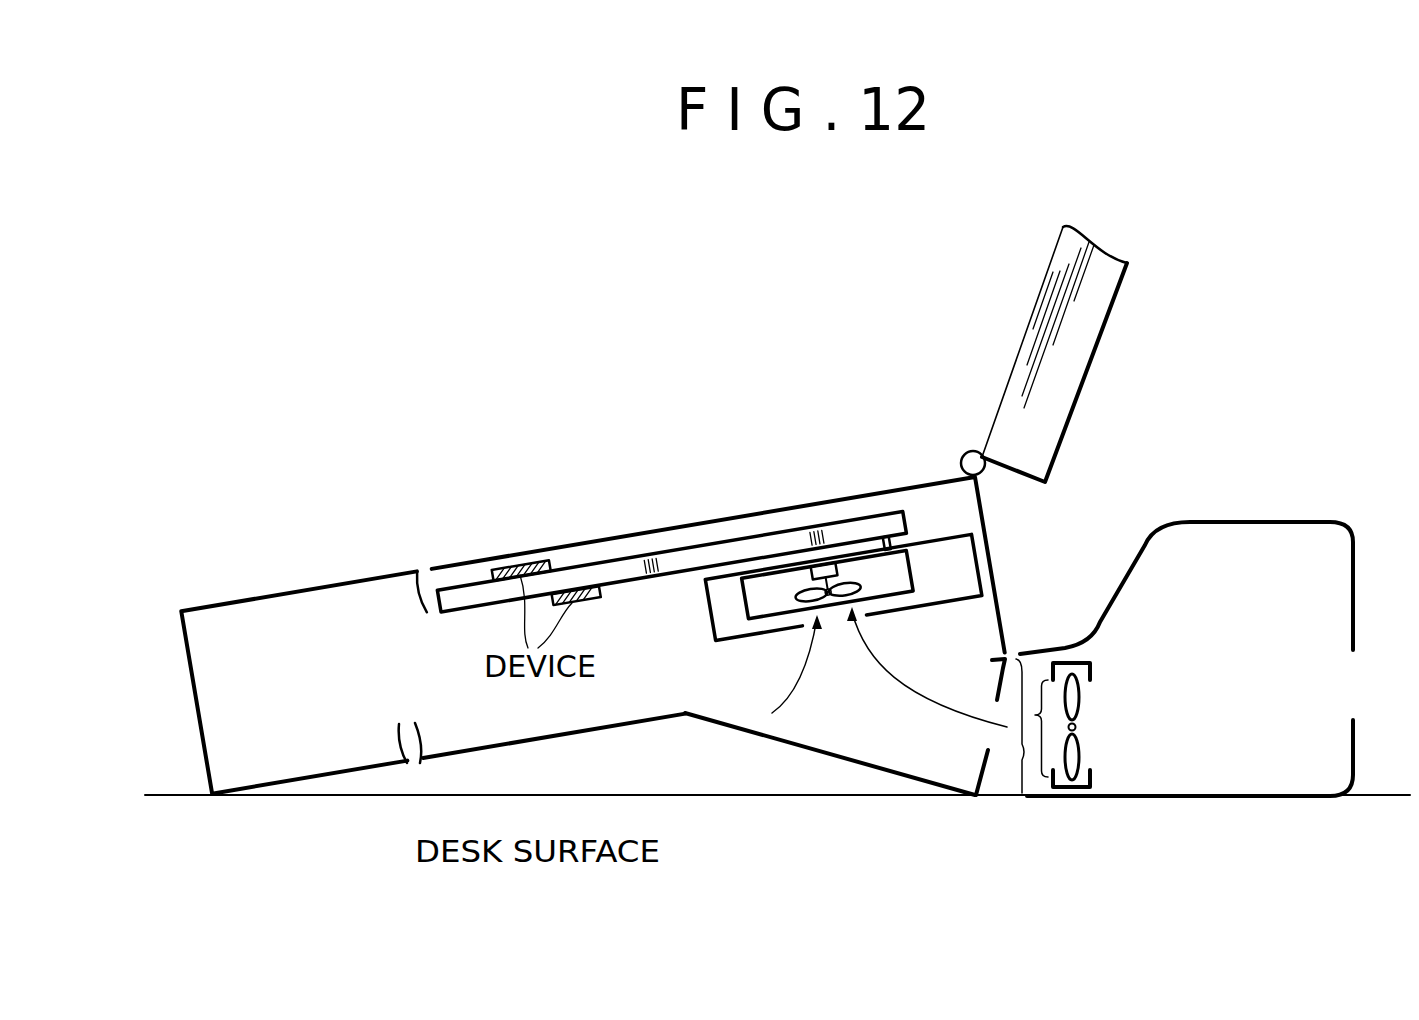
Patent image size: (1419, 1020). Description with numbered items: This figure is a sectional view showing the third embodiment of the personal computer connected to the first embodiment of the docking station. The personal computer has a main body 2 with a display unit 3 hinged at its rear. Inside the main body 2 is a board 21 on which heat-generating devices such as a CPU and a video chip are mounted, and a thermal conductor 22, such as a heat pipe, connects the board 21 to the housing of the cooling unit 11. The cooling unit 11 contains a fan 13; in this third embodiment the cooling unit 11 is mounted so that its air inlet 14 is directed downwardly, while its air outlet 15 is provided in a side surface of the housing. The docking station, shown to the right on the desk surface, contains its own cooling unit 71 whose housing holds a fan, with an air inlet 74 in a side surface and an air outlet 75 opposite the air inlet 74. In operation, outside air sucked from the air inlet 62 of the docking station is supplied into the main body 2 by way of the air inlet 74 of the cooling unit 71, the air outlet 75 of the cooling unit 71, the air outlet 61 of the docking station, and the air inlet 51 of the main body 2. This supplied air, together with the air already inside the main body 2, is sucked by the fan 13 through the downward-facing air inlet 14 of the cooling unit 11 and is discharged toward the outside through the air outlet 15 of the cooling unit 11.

The main body 2 is at (187, 612).
The display unit 3 is at (1022, 363).
The cooling unit 11 is at (705, 603).
The fan 13 is at (800, 582).
The air inlet 14 is at (868, 622).
The air outlet 15 is at (913, 571).
The board 21 is at (614, 571).
The thermal conductor 22 is at (853, 547).
The air inlet 51 is at (991, 747).
The air outlet 61 is at (1027, 796).
The air inlet 62 is at (1362, 650).
The cooling unit 71 is at (1093, 779).
The air inlet 74 is at (1097, 682).
The air outlet 75 is at (1033, 710).